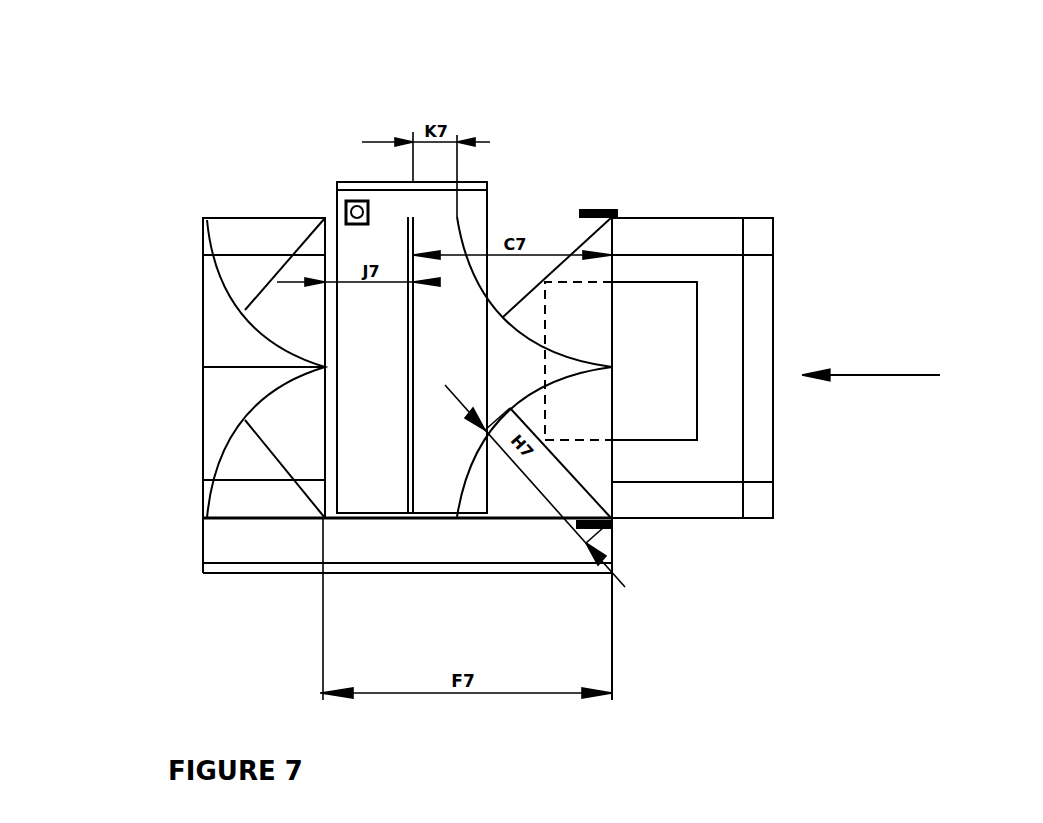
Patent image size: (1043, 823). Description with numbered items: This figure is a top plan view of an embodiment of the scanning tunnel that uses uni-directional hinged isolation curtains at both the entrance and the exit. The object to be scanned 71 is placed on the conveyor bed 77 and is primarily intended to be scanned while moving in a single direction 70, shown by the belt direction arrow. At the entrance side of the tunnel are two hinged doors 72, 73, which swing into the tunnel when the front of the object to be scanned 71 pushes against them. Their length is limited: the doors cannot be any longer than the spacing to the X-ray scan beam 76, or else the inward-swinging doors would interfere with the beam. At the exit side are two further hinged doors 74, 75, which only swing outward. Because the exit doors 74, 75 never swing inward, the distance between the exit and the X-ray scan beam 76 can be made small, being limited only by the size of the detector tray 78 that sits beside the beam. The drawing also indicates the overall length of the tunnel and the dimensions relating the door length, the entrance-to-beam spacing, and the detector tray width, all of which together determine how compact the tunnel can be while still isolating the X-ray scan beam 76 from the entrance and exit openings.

The single direction 70 is at (909, 396).
The object to be scanned 71 is at (687, 293).
The entrance door 72 is at (558, 254).
The entrance door 73 is at (557, 464).
The exit door 74 is at (279, 263).
The exit door 75 is at (277, 468).
The X-ray scan beam 76 is at (410, 204).
The conveyor bed 77 is at (725, 280).
The detector tray 78 is at (387, 220).